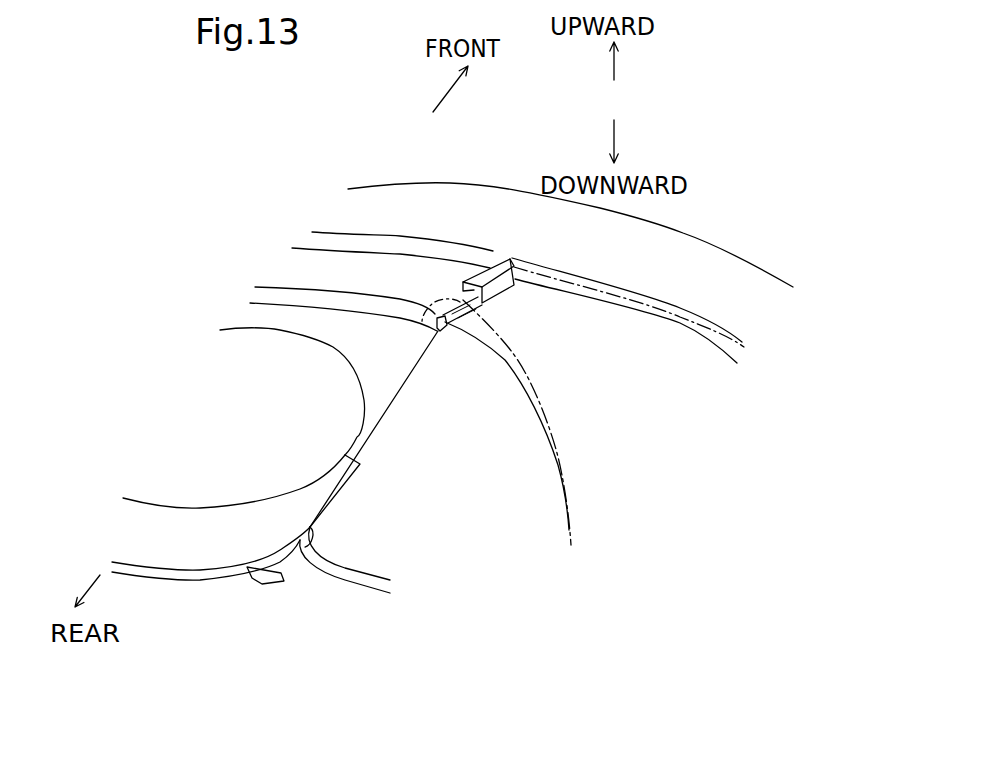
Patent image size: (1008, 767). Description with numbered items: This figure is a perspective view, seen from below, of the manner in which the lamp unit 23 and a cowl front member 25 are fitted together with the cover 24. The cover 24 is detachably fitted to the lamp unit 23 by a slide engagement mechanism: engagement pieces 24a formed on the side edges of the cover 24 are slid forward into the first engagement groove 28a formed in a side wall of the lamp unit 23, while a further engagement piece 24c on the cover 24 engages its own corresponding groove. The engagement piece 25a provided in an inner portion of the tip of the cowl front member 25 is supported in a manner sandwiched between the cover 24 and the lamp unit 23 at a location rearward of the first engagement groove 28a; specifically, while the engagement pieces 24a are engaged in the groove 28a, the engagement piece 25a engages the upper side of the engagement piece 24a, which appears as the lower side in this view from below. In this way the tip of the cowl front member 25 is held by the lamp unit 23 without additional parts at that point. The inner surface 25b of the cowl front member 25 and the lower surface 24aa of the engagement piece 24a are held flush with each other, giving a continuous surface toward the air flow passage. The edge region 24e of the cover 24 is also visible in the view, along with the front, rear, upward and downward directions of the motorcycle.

The lamp unit 23 is at (689, 222).
The cover 24 is at (261, 274).
The engagement piece 24a is at (455, 297).
The lower surface of engagement piece 24aa is at (427, 287).
The engagement piece 24c is at (263, 583).
The flange edge 24e is at (235, 382).
The cowl front member 25 is at (760, 372).
The engagement piece 25a is at (422, 322).
The inner surface 25b is at (662, 353).
The engagement groove 28a is at (490, 266).